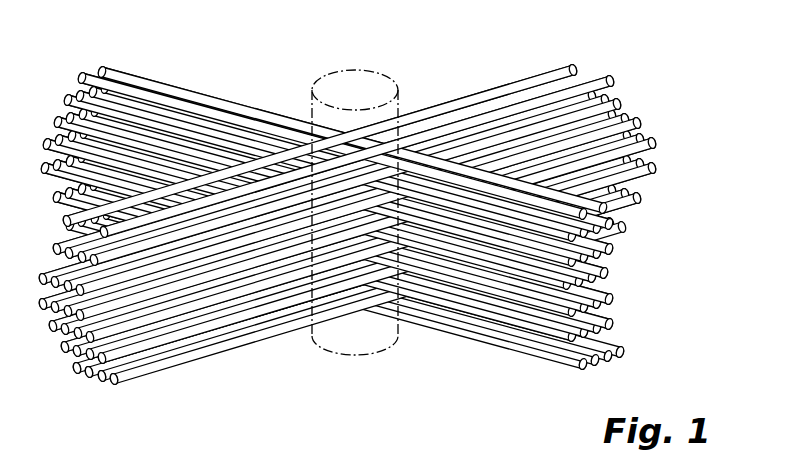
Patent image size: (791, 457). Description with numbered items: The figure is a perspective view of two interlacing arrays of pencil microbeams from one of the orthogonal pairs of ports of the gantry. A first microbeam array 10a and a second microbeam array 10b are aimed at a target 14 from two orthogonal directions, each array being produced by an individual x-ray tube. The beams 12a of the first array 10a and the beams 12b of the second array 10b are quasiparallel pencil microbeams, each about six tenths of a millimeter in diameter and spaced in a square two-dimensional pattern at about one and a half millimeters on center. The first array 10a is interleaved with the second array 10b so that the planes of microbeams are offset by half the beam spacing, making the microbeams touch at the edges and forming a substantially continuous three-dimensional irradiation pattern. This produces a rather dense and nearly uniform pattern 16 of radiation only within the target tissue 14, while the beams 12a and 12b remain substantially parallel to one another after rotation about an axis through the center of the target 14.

The first microbeam array 10a is at (158, 72).
The second microbeam array 10b is at (537, 69).
The beams of the first array 12a is at (546, 352).
The beams of the second array 12b is at (147, 343).
The target 14 is at (355, 208).
The pattern of radiation 16 is at (343, 318).